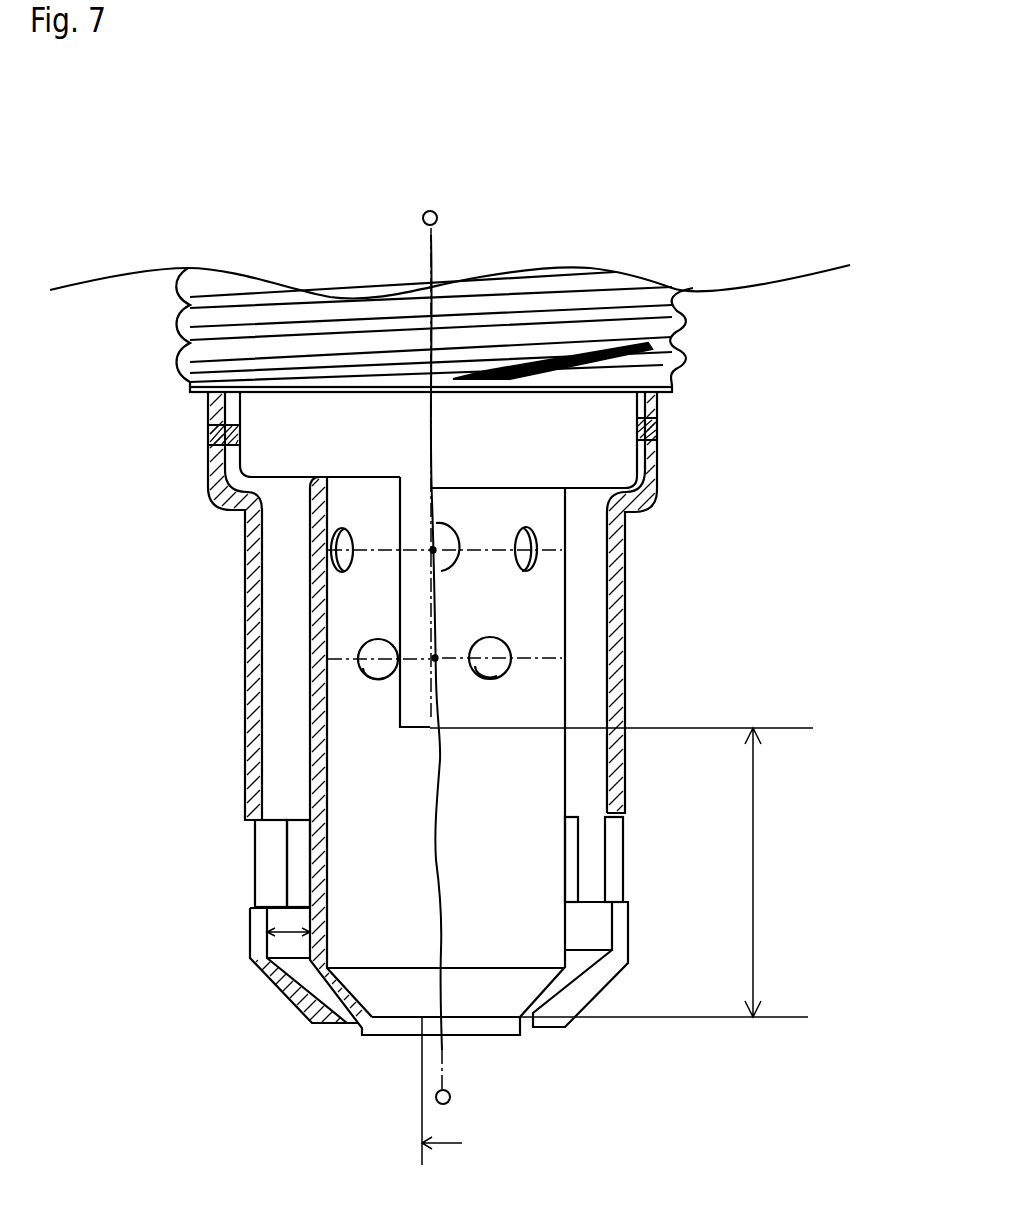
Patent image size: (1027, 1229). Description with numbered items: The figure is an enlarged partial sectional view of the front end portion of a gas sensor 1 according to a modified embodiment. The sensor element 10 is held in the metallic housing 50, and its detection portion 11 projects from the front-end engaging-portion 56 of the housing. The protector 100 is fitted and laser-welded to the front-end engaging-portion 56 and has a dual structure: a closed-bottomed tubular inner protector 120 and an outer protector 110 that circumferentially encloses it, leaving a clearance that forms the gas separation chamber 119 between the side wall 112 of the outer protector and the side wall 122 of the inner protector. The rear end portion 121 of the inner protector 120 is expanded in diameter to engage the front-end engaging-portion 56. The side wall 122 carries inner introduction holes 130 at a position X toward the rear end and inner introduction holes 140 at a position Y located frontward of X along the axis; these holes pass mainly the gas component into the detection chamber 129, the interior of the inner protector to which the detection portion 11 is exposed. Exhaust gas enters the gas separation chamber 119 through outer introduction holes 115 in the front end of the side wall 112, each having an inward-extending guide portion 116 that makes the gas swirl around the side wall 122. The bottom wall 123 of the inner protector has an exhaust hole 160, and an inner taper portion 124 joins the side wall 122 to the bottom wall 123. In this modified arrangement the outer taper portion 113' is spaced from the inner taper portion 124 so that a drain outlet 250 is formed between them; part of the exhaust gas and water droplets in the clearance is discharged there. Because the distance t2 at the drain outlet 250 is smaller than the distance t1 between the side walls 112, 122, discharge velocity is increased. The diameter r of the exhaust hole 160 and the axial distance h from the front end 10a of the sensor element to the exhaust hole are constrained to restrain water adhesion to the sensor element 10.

The gas sensor 1 is at (741, 183).
The metallic housing 50 is at (716, 345).
The protector 100 is at (720, 1058).
The outer protector 110 is at (649, 989).
The side wall of the outer protector 112 is at (243, 662).
The rear end portion of the inner protector 121 is at (210, 480).
The front-end engaging-portion 56 is at (274, 448).
The side wall of the inner protector 122 is at (310, 743).
The inner introduction holes 130 is at (332, 567).
The inner introduction holes 140 is at (360, 680).
The sensor element 10 is at (401, 745).
The front end of the sensor element 10a is at (418, 750).
The detection portion 11 is at (432, 737).
The guide portion 116 is at (280, 860).
The outer introduction holes 115 is at (268, 905).
The inner taper portion 124 is at (300, 1003).
The outer taper portion 113' is at (381, 988).
The drain outlet 250 is at (335, 1036).
The bottom wall 123 is at (397, 1022).
The exhaust hole 160 is at (416, 1026).
The inner protector 120 is at (563, 1044).
The gas separation chamber 119 is at (295, 488).
The detection chamber 129 is at (367, 480).
The position X is at (430, 552).
The position Y is at (432, 661).
The axial distance h is at (592, 872).
The distance between circumferential portions t1 is at (258, 947).
The distance at the drain outlet t2 is at (335, 1030).
The diameter of the exhaust hole r is at (442, 1091).